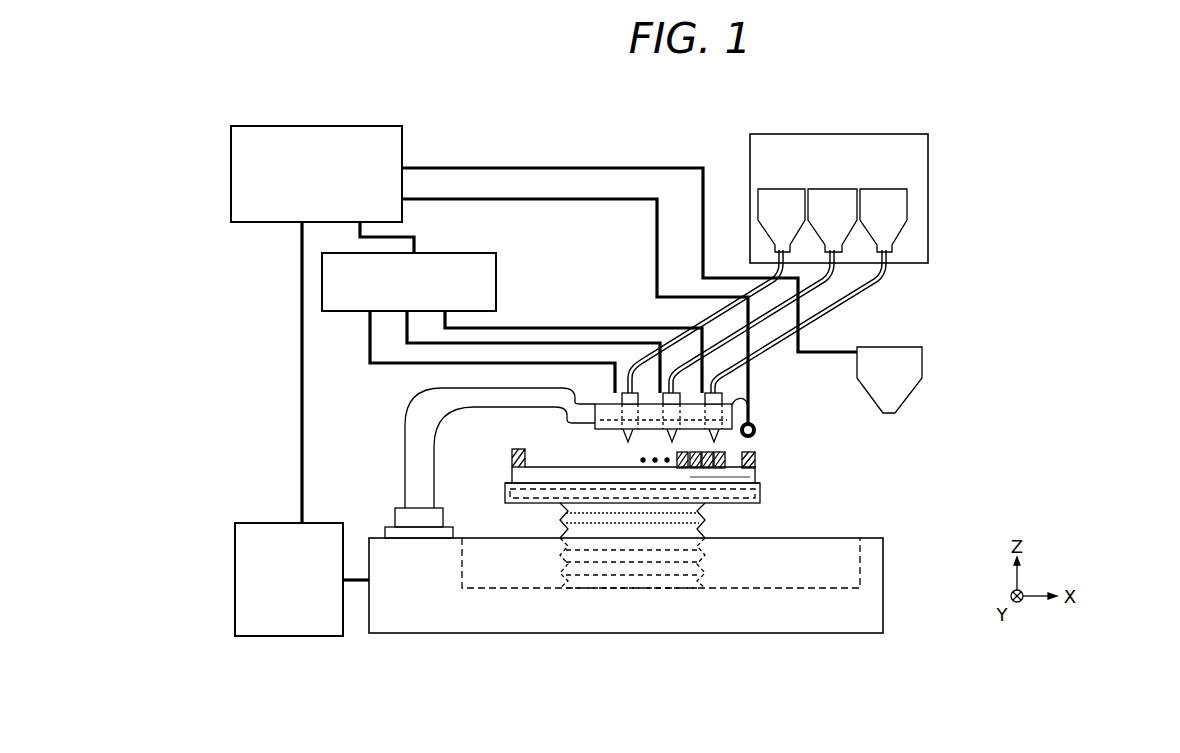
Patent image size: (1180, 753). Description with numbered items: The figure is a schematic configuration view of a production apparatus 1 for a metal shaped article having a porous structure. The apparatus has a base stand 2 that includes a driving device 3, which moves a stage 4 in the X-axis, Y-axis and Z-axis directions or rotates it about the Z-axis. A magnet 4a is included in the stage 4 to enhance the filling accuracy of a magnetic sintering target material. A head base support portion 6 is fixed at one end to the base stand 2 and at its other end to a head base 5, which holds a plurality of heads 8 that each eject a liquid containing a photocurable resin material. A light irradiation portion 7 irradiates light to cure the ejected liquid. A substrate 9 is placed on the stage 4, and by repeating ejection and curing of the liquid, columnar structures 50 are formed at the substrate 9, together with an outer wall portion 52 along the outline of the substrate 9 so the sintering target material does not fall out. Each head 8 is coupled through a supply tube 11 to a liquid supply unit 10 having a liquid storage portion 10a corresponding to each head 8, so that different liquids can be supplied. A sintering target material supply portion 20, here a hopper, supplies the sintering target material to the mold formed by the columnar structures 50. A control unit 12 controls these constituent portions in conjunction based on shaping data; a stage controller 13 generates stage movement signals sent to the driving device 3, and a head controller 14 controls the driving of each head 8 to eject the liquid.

The production apparatus 1 is at (1076, 256).
The base stand 2 is at (422, 595).
The driving device 3 is at (565, 525).
The stage 4 is at (505, 494).
The magnet 4a is at (762, 500).
The head base 5 is at (737, 399).
The head base support portion 6 is at (427, 422).
The light irradiation portion 7 is at (757, 430).
The head 8 is at (627, 437).
The substrate 9 is at (688, 477).
The liquid supply unit 10 is at (928, 175).
The liquid storage portion 10a is at (782, 210).
The supply tube 11 is at (830, 308).
The control unit 12 is at (387, 138).
The stage controller 13 is at (317, 542).
The head controller 14 is at (478, 268).
The sintering target material supply portion 20 is at (925, 355).
The columnar structures 50 is at (717, 456).
The outer wall portion 52 is at (512, 457).